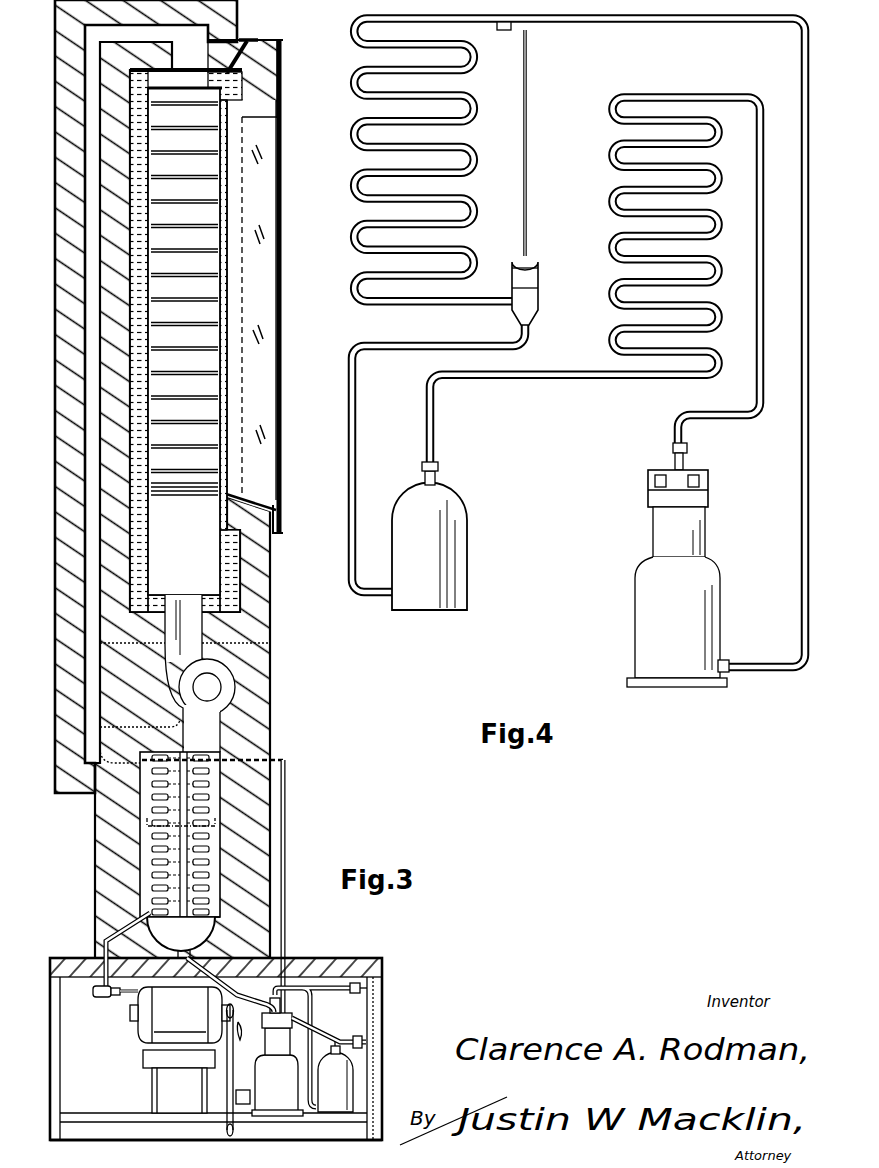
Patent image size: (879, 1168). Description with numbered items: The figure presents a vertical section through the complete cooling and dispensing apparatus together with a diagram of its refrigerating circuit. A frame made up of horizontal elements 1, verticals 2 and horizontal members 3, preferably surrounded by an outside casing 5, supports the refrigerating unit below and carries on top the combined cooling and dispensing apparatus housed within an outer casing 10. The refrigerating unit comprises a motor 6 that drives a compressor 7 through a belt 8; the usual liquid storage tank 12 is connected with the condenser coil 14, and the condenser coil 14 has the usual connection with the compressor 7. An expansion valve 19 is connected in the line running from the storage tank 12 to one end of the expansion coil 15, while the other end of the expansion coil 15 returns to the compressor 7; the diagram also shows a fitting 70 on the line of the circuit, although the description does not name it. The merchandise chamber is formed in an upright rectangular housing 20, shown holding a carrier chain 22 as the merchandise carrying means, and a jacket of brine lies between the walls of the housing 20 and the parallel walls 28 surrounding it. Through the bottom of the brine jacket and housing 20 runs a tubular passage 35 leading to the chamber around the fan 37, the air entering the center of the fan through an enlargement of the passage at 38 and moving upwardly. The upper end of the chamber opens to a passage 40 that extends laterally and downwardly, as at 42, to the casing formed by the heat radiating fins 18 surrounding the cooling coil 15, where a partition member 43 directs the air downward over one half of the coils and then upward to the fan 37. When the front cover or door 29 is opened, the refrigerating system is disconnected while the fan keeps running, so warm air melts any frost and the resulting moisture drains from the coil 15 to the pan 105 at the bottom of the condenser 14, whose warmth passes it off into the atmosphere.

In FIG. 3, the horizontal elements 1 is at (186, 1122).
In FIG. 3, the verticals 2 is at (373, 1083).
In FIG. 3, the horizontal members 3 is at (346, 968).
In FIG. 3, the outside casing 5 is at (38, 1053).
In FIG. 3, the motor 6 is at (180, 1050).
In FIG. 3, the compressor 7 is at (277, 1057).
In FIG. 4, the compressor 7 is at (678, 565).
In FIG. 3, the belt 8 is at (234, 1048).
In FIG. 3, the outer casing 10 is at (270, 612).
In FIG. 3, the liquid storage tank 12 is at (335, 1077).
In FIG. 4, the liquid storage tank 12 is at (429, 536).
In FIG. 3, the condenser coil 14 is at (373, 1000).
In FIG. 4, the condenser coil 14 is at (612, 340).
In FIG. 3, the expansion coil 15 is at (152, 757).
In FIG. 4, the expansion coil 15 is at (467, 170).
In FIG. 3, the heat radiating fins 18 is at (180, 937).
In FIG. 3, the expansion valve 19 is at (108, 997).
In FIG. 4, the expansion valve 19 is at (539, 280).
In FIG. 3, the housing 20 is at (149, 580).
In FIG. 3, the carrier chain 22 is at (184, 298).
In FIG. 3, the parallel walls 28 is at (140, 545).
In FIG. 3, the front cover or door 29 is at (283, 132).
In FIG. 3, the tubular passage 35 is at (183, 673).
In FIG. 3, the fan 37 is at (207, 687).
In FIG. 3, the enlargement of the passage 38 is at (236, 680).
In FIG. 3, the passage 40 is at (194, 56).
In FIG. 3, the downward extension of passage 42 is at (88, 248).
In FIG. 3, the partition member 43 is at (186, 745).
In FIG. 4, the capillary fitting 70 is at (531, 30).
In FIG. 3, the pan 105 is at (365, 1050).